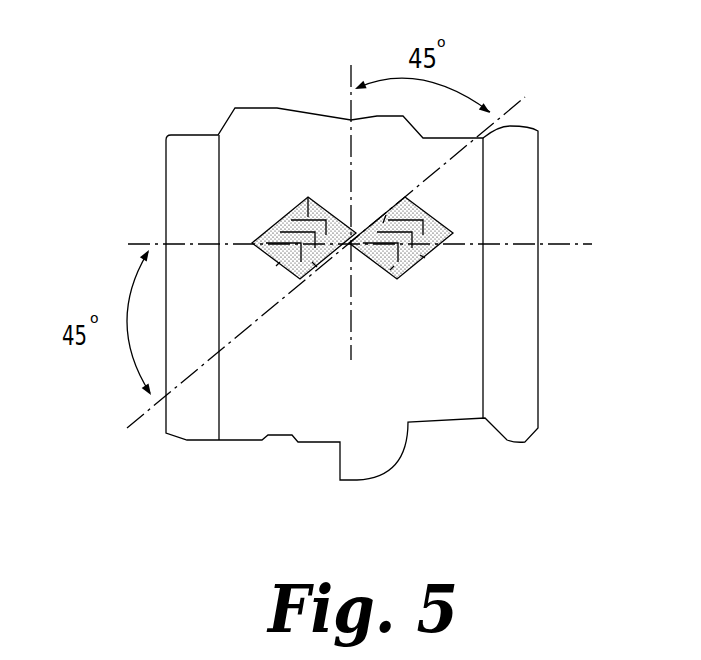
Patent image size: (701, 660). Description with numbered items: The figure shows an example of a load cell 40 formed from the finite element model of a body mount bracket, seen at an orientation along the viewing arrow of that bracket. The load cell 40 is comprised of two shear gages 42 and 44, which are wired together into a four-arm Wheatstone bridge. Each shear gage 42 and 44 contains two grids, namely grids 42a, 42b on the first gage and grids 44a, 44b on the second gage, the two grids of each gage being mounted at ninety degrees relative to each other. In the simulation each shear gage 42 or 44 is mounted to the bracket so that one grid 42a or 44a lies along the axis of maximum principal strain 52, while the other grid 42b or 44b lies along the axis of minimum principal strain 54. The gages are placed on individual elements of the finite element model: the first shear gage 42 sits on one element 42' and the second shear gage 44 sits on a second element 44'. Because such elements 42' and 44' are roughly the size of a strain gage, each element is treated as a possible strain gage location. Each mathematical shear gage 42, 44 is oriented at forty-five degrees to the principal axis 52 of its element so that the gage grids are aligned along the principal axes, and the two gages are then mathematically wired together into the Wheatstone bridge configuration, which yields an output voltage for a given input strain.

The load cell 40 is at (233, 103).
The shear gage 42 is at (262, 264).
The grid 42a is at (308, 197).
The grid 42b is at (317, 267).
The element 42' is at (224, 298).
The shear gage 44 is at (433, 263).
The grid 44a is at (383, 223).
The grid 44b is at (425, 258).
The element 44' is at (384, 309).
The axis of maximum principal strain 52 is at (552, 243).
The axis of minimum principal strain 54 is at (351, 88).